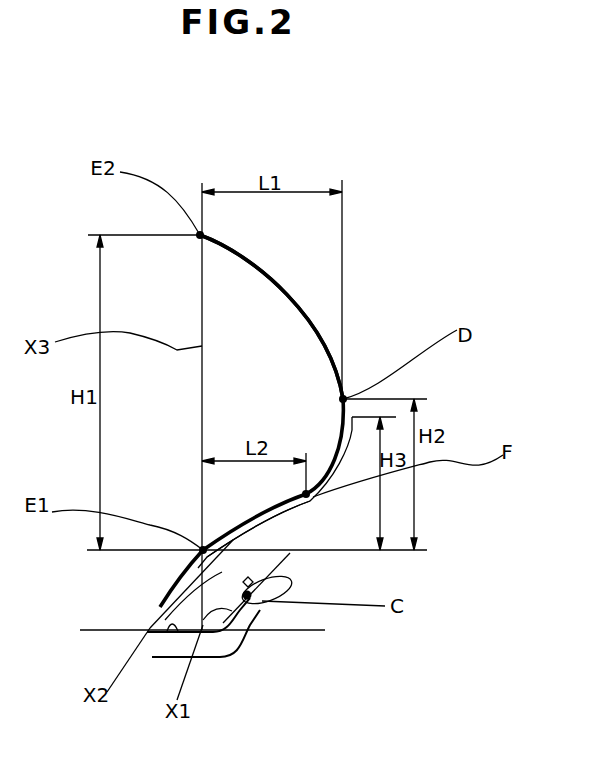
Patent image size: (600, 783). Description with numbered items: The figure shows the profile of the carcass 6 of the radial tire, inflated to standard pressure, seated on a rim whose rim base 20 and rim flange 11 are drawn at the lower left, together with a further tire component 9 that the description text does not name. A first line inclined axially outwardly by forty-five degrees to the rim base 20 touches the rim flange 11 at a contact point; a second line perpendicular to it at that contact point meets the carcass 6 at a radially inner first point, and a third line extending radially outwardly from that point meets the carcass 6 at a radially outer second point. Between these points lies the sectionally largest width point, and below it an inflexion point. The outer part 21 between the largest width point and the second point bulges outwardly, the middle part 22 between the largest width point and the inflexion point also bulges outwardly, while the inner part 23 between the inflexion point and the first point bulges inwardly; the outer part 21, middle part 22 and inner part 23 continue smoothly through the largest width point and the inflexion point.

The carcass 6 is at (300, 307).
The outer part 21 is at (268, 275).
The middle part 22 is at (343, 437).
The reinforcing layer 9 is at (262, 518).
The inner part 23 is at (262, 521).
The rim base 20 is at (172, 603).
The rim flange 11 is at (250, 617).